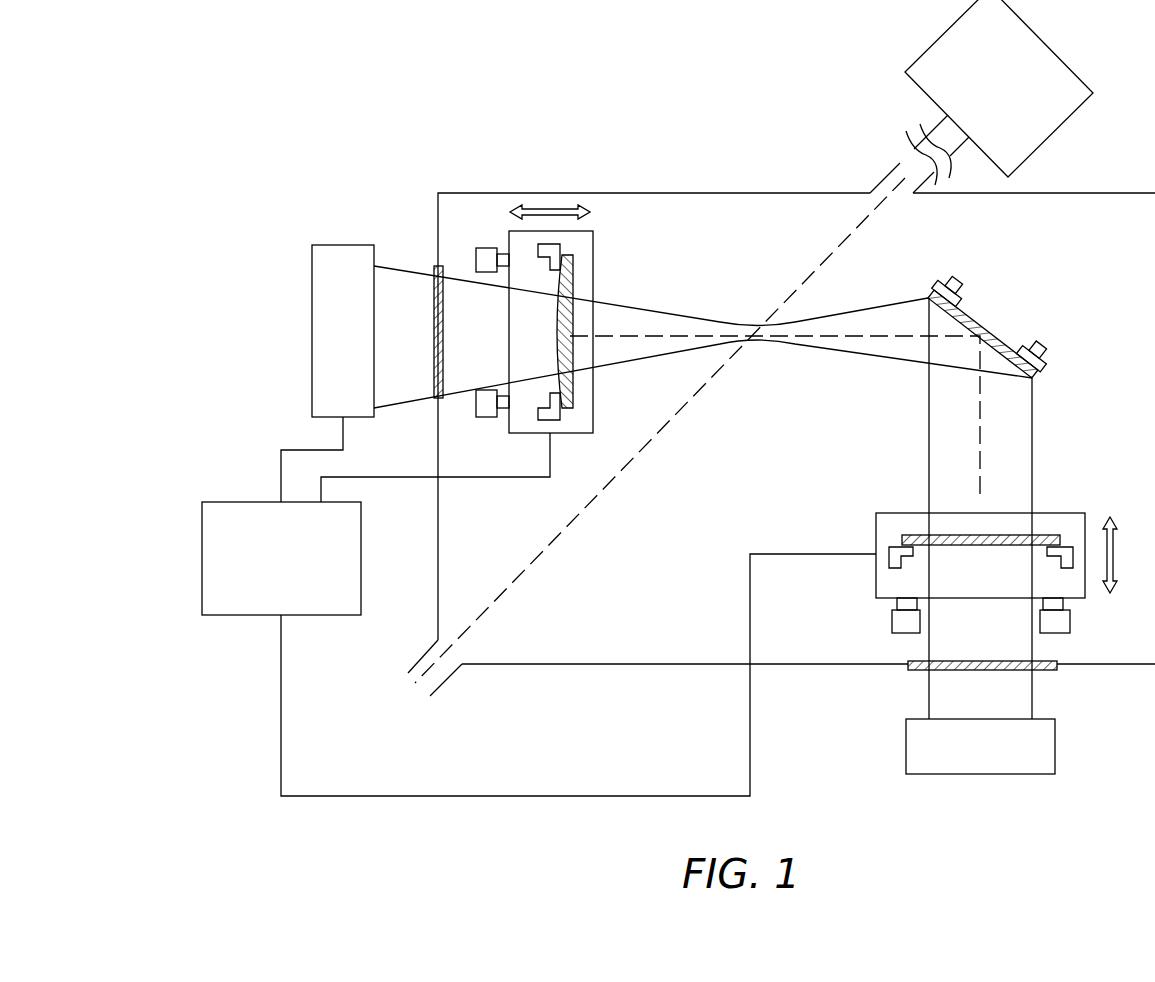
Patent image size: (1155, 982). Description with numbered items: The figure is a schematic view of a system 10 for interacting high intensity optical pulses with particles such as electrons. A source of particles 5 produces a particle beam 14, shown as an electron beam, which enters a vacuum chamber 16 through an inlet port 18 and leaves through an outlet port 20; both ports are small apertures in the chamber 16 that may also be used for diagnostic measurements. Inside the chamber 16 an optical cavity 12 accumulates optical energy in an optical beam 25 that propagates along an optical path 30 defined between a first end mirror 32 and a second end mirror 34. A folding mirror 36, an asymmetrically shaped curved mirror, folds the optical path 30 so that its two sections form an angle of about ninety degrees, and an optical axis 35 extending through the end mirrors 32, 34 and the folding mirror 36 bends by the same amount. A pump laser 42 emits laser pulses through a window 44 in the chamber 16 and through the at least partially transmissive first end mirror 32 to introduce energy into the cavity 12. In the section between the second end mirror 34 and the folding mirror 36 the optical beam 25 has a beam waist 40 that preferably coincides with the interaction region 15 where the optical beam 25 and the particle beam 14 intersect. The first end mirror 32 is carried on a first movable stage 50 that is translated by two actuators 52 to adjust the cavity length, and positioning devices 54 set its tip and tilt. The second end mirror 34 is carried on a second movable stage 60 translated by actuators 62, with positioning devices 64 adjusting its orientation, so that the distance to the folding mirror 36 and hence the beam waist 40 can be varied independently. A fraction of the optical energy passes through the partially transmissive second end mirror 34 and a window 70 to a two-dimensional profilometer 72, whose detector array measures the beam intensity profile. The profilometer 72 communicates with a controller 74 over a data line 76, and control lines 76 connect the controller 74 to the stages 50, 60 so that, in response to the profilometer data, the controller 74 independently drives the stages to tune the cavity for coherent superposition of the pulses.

The source of particles 5 is at (927, 50).
The system 10 is at (308, 156).
The optical cavity 12 is at (1040, 284).
The particle beam 14 is at (582, 513).
The interaction region 15 is at (750, 312).
The chamber 16 is at (615, 193).
The inlet port 18 is at (877, 185).
The outlet port 20 is at (448, 682).
The optical beam 25 is at (893, 322).
The optical path 30 is at (1020, 462).
The first end reflective element 32 is at (925, 535).
The second end reflective element 34 is at (575, 387).
The optical axis 35 is at (980, 415).
The folding mirror 36 is at (1032, 378).
The beam waist 40 is at (770, 340).
The pump laser 42 is at (1025, 775).
The window 44 is at (1050, 672).
The first movable stage 50 is at (876, 590).
The actuators 52 is at (1070, 622).
The positioning devices 54 is at (889, 560).
The second movable stage 60 is at (509, 333).
The actuators 62 is at (490, 258).
The positioning devices 64 is at (545, 413).
The window 70 is at (437, 265).
The 2-D profilometer 72 is at (312, 292).
The controller 74 is at (202, 520).
The control lines 76 is at (290, 448).